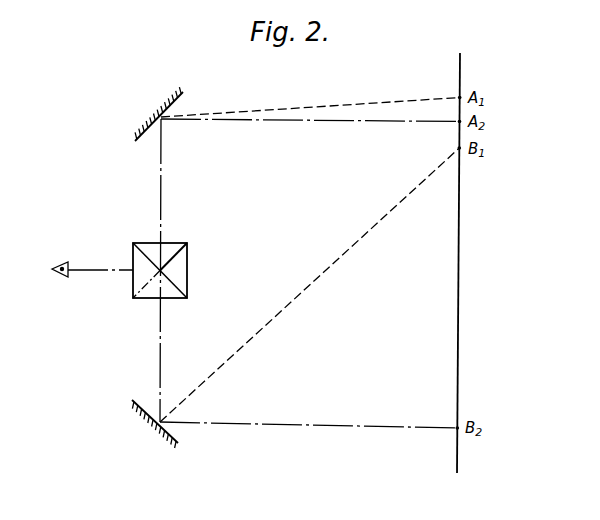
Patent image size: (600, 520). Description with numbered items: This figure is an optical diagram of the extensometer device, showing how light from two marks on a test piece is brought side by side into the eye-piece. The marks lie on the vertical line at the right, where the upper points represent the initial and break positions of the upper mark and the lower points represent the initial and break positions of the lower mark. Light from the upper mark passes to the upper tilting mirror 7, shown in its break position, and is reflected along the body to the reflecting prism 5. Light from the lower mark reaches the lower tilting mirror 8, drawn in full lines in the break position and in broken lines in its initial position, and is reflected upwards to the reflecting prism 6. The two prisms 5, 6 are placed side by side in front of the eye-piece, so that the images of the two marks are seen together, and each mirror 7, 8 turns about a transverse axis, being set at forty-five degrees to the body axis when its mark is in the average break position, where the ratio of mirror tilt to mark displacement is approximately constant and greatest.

The reflecting prism 5 is at (163, 248).
The reflecting prism 6 is at (162, 273).
The upper tilting mirror 7 is at (178, 96).
The lower tilting mirror 8 is at (181, 443).